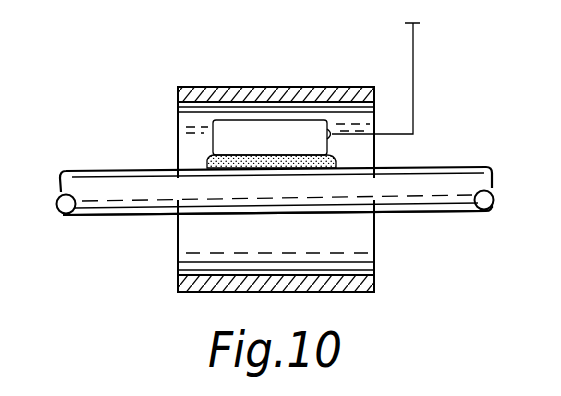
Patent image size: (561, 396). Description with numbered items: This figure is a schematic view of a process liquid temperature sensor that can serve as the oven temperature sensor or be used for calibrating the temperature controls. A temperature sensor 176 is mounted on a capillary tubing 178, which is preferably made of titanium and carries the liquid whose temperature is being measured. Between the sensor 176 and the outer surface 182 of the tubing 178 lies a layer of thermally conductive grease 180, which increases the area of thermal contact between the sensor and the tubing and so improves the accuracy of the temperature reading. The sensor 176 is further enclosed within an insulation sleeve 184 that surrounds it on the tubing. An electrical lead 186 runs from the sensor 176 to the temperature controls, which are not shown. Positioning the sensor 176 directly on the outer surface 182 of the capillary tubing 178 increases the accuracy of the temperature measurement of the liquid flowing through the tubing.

The temperature sensor 176 is at (252, 127).
The capillary tubing 178 is at (412, 195).
The layer of thermally conductive grease 180 is at (207, 161).
The outer surface of the tubing 182 is at (416, 166).
The insulation sleeve 184 is at (293, 88).
The electrical lead 186 is at (413, 69).